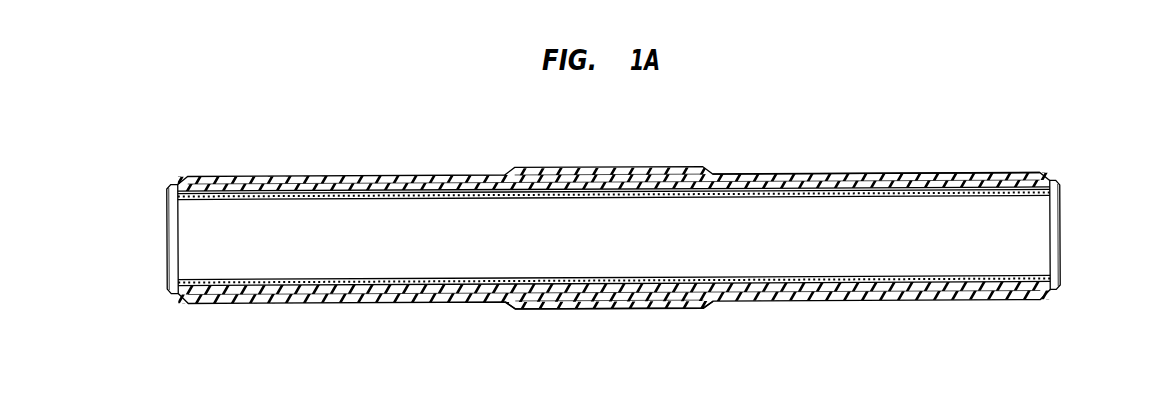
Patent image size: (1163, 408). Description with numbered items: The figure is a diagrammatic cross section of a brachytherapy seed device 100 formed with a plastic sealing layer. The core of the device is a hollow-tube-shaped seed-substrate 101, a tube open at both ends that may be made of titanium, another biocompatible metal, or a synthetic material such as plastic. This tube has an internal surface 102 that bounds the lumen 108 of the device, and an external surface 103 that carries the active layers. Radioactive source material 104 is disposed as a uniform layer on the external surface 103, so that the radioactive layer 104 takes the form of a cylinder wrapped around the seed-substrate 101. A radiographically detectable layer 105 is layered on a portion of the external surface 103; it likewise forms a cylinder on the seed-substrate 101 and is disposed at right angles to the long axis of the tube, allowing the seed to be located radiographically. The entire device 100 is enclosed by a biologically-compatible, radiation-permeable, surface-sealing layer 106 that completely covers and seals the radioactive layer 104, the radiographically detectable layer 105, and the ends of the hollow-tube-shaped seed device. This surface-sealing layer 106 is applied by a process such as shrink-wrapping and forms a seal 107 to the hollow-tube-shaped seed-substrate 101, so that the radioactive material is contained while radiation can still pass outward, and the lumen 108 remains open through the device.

The device 100 is at (638, 167).
The hollow-tube-shaped seed-substrate 101 is at (808, 298).
The internal surface 102 is at (884, 210).
The external surface 103 is at (759, 185).
The radioactive source material 104 is at (880, 173).
The radiographically detectable layer 105 is at (560, 282).
The surface-sealing layer 106 is at (612, 309).
The seal 107 is at (183, 174).
The lumen 108 is at (1040, 238).